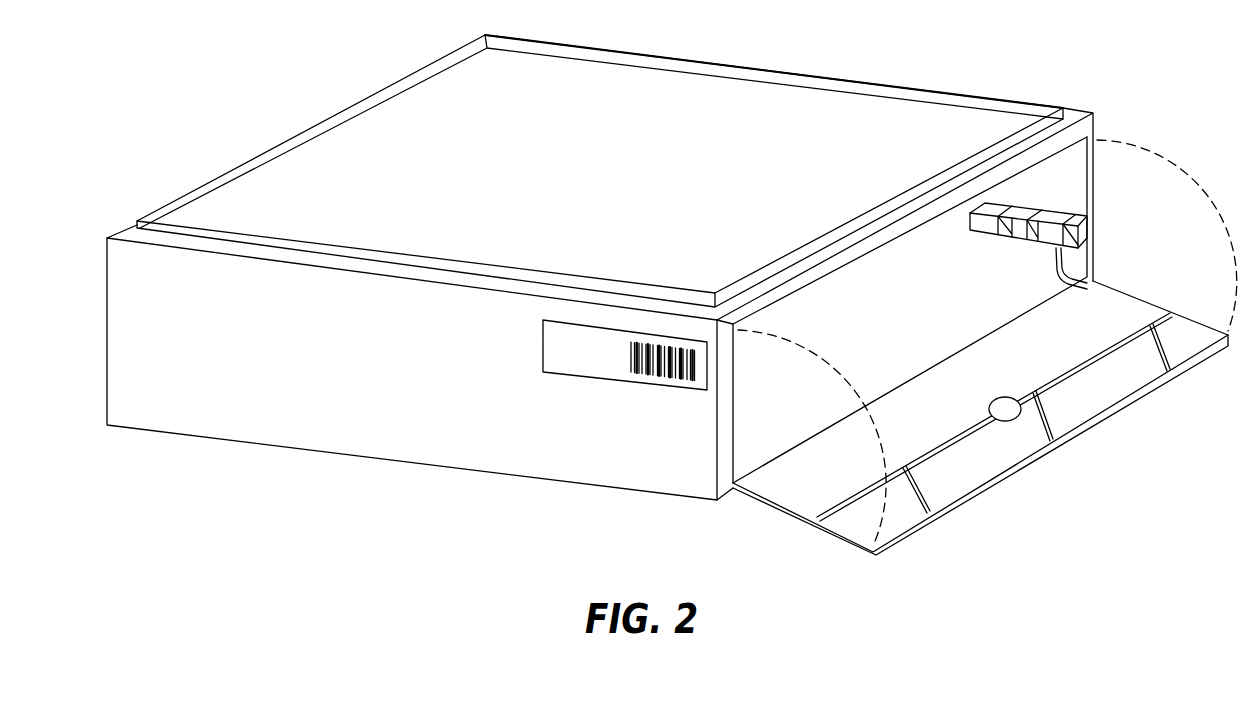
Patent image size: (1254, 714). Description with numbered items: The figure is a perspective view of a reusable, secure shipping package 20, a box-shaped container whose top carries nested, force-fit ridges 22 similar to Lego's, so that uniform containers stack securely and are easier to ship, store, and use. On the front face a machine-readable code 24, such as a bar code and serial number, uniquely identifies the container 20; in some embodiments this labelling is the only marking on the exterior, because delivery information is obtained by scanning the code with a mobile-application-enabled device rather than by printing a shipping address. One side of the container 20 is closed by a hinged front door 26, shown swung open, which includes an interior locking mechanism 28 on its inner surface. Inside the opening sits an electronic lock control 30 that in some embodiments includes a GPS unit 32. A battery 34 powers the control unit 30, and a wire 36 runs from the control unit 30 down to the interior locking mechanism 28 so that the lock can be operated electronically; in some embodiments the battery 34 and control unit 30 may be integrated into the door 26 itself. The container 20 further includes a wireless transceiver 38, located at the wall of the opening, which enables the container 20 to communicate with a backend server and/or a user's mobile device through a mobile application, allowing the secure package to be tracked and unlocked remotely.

The shipping package 20 is at (215, 457).
The ridges 22 is at (262, 154).
The machine-readable code 24 is at (628, 383).
The hinged front door 26 is at (1103, 420).
The interior locking mechanism 28 is at (1010, 395).
The electronic lock control 30 is at (1063, 214).
The GPS unit 32 is at (958, 230).
The battery 34 is at (1032, 207).
The wire 36 is at (1050, 260).
The wireless transceiver 38 is at (1083, 238).